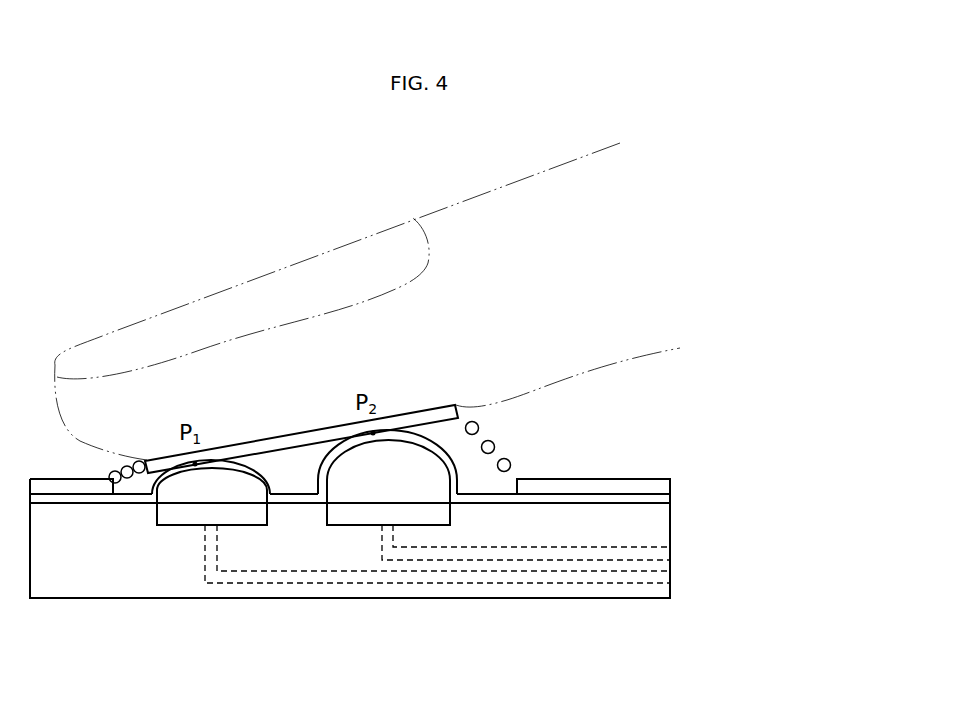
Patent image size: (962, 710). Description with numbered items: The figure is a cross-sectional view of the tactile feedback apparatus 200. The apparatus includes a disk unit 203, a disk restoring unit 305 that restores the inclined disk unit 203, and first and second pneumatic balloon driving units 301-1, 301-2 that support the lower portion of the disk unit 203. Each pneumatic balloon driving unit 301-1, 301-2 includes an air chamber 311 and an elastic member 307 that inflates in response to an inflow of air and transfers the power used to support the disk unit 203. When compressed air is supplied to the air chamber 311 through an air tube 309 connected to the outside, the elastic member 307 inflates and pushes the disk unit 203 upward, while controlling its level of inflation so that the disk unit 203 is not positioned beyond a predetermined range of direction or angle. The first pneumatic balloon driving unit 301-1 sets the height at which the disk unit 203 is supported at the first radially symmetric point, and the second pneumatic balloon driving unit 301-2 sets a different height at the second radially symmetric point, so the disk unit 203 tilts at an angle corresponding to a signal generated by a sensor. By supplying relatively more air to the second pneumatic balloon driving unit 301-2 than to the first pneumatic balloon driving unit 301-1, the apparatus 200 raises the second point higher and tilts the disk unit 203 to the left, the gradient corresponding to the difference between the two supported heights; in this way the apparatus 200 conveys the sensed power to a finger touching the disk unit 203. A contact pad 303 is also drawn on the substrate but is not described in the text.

The tactile feedback apparatus 200 is at (682, 398).
The disk unit 203 is at (298, 438).
The first pneumatic balloon driving unit 301-1 is at (182, 570).
The second pneumatic balloon driving unit 301-2 is at (459, 535).
The contact pad 303 is at (631, 486).
The disk restoring unit 305 is at (493, 445).
The elastic member 307 is at (242, 472).
The air tube 309 is at (333, 583).
The air chamber 311 is at (170, 525).